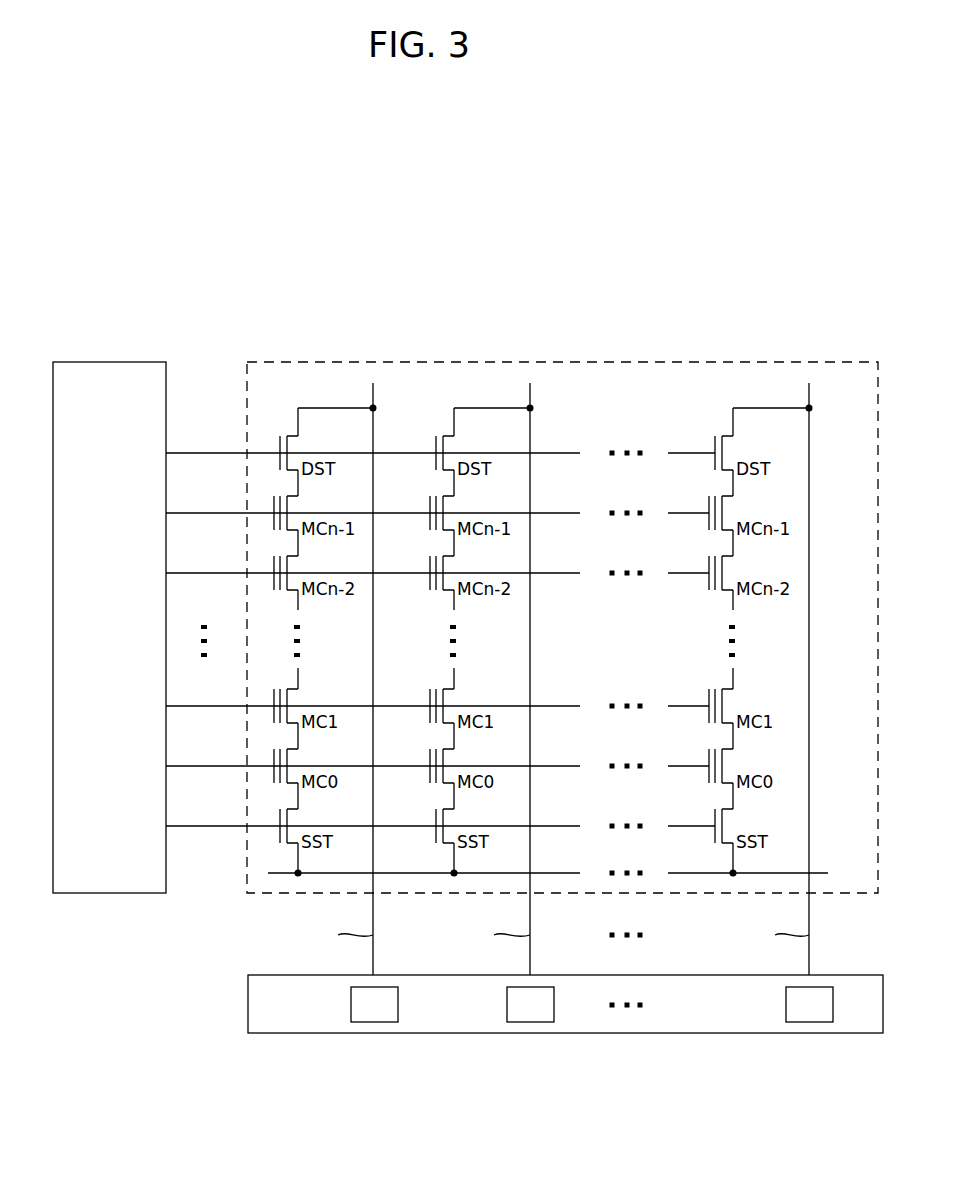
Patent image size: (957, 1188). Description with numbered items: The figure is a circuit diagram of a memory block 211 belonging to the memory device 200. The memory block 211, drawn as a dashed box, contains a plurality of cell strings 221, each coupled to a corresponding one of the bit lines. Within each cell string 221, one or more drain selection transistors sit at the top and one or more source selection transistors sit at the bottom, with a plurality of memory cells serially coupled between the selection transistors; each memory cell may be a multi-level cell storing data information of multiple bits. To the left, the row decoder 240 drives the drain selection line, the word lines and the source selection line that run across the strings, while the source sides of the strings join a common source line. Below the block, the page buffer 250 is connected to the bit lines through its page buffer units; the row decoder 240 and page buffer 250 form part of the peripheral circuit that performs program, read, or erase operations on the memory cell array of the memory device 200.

The memory device 200 is at (856, 268).
The memory block 211 is at (773, 362).
The cell string 221 is at (284, 404).
The row decoder 240 is at (110, 362).
The page buffer 250 is at (248, 1004).